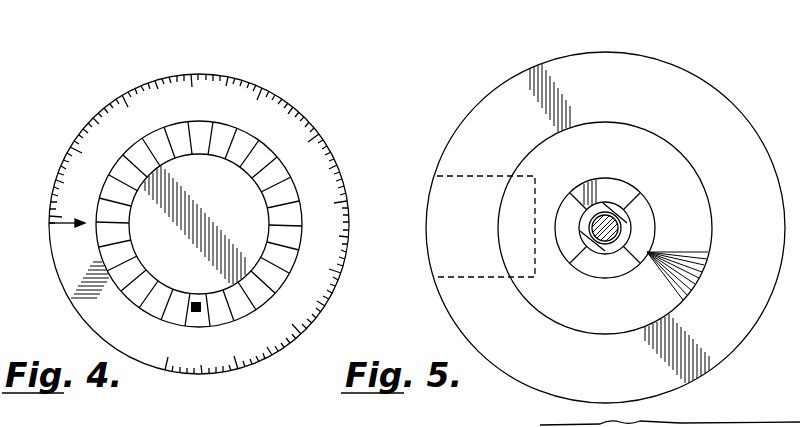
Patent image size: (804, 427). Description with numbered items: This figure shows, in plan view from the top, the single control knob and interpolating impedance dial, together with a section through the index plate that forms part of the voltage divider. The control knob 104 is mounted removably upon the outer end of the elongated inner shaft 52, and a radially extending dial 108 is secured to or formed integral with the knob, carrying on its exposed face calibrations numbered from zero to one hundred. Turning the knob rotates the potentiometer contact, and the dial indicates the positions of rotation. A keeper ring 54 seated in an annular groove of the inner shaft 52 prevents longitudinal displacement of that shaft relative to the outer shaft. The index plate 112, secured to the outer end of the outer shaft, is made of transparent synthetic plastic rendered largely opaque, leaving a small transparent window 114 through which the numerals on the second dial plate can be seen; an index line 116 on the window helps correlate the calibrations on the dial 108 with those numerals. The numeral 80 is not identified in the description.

In FIG. 4, the control knob 104 is at (199, 224).
In FIG. 4, the dial 108 is at (334, 158).
In FIG. 4, the register element 80 is at (11, 121).
In FIG. 5, the index plate 112 is at (747, 328).
In FIG. 5, the transparent window 114 is at (443, 256).
In FIG. 5, the index line 116 is at (507, 226).
In FIG. 5, the inner shaft 52 is at (621, 236).
In FIG. 5, the keeper ring 54 is at (612, 253).